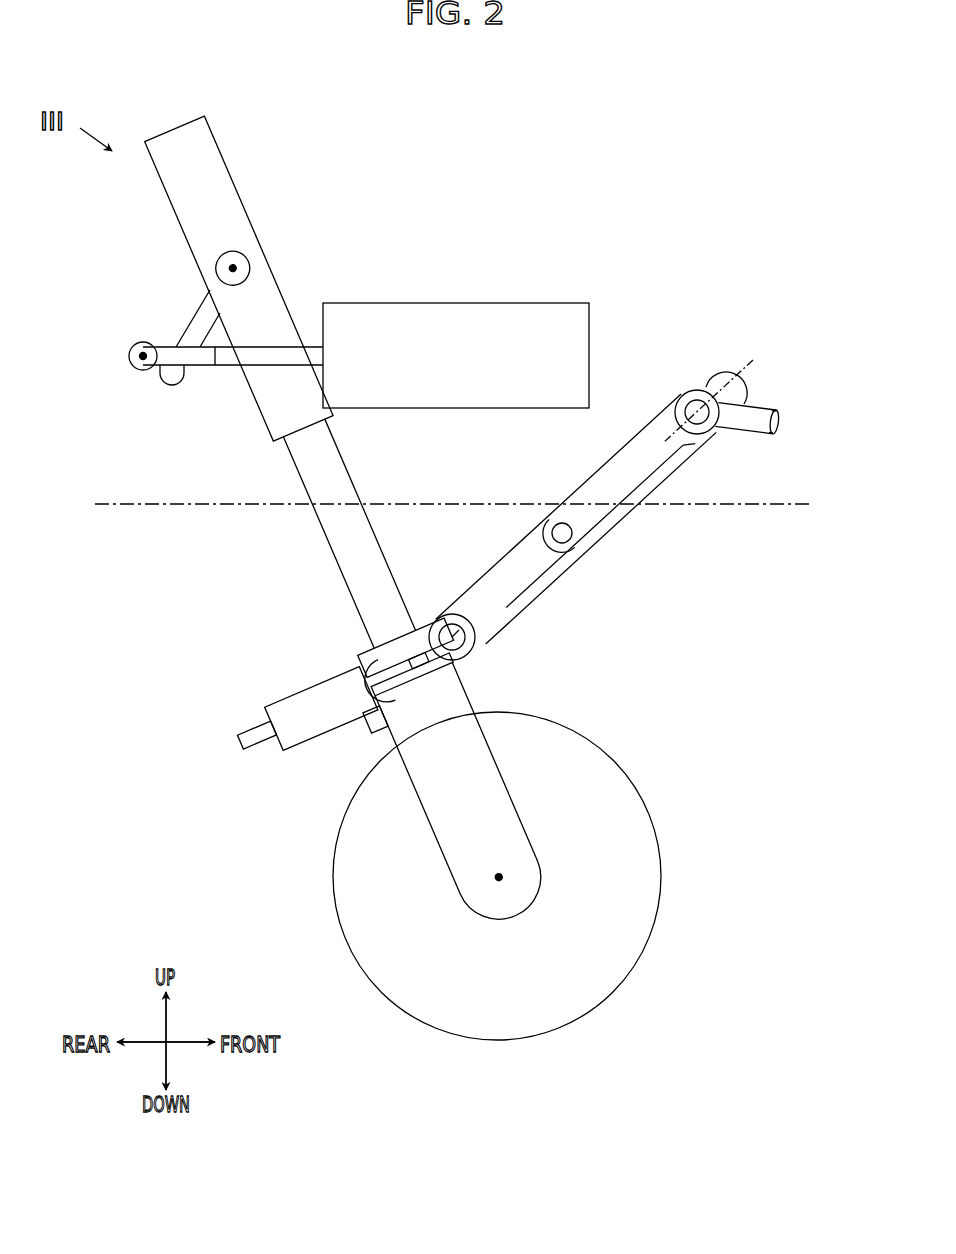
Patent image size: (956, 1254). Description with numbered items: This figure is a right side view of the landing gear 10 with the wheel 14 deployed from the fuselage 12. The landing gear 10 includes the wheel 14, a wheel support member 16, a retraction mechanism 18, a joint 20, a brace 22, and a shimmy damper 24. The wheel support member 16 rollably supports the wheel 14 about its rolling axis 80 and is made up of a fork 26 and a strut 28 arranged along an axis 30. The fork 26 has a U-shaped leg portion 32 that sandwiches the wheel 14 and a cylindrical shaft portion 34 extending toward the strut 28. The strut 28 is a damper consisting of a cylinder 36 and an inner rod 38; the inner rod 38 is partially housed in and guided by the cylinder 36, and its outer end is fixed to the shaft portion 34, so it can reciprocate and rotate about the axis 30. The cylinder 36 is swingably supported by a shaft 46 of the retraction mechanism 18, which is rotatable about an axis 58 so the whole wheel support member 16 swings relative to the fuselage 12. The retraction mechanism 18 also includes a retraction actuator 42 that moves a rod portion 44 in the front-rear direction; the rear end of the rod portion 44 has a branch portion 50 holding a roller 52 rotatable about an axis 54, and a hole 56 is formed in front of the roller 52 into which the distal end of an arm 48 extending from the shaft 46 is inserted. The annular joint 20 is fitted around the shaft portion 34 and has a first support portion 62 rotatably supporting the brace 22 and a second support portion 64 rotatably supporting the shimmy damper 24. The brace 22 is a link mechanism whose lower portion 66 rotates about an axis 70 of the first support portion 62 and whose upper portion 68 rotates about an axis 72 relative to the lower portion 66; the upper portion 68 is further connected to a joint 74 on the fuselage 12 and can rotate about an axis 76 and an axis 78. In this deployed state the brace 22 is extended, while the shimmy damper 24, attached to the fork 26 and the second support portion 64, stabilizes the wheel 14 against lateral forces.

The landing gear 10 is at (514, 125).
The fuselage 12 is at (740, 506).
The wheel 14 is at (430, 1013).
The wheel support member 16 is at (412, 764).
The retraction mechanism 18 is at (329, 331).
The joint 20 is at (366, 664).
The brace 22 is at (615, 510).
The shimmy damper 24 is at (290, 716).
The fork 26 is at (476, 789).
The strut 28 is at (273, 349).
The axis 30 is at (233, 301).
The leg portion 32 is at (549, 640).
The shaft portion 34 is at (447, 668).
The cylinder 36 is at (283, 427).
The inner rod 38 is at (352, 543).
The retraction actuator 42 is at (433, 303).
The rod portion 44 is at (223, 373).
The shaft 46 is at (262, 242).
The arm 48 is at (205, 302).
The branch portion 50 is at (178, 376).
The roller 52 is at (131, 355).
The axis 54 is at (140, 362).
The hole 56 is at (113, 349).
The axis 58 is at (238, 267).
The first support portion 62 is at (430, 624).
The second support portion 64 is at (378, 660).
The lower portion 66 is at (500, 592).
The upper portion 68 is at (612, 483).
The axis 70 is at (452, 623).
The axis 72 is at (557, 554).
The joint 74 is at (748, 412).
The axis 76 is at (680, 426).
The axis 78 is at (780, 424).
The rolling axis 80 is at (500, 879).